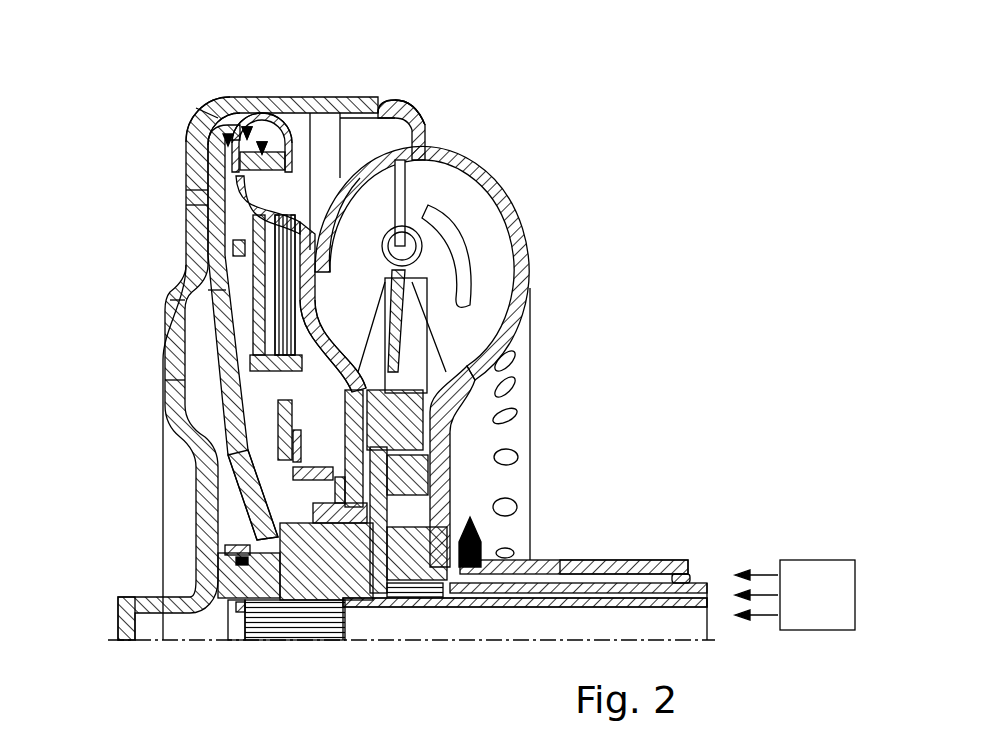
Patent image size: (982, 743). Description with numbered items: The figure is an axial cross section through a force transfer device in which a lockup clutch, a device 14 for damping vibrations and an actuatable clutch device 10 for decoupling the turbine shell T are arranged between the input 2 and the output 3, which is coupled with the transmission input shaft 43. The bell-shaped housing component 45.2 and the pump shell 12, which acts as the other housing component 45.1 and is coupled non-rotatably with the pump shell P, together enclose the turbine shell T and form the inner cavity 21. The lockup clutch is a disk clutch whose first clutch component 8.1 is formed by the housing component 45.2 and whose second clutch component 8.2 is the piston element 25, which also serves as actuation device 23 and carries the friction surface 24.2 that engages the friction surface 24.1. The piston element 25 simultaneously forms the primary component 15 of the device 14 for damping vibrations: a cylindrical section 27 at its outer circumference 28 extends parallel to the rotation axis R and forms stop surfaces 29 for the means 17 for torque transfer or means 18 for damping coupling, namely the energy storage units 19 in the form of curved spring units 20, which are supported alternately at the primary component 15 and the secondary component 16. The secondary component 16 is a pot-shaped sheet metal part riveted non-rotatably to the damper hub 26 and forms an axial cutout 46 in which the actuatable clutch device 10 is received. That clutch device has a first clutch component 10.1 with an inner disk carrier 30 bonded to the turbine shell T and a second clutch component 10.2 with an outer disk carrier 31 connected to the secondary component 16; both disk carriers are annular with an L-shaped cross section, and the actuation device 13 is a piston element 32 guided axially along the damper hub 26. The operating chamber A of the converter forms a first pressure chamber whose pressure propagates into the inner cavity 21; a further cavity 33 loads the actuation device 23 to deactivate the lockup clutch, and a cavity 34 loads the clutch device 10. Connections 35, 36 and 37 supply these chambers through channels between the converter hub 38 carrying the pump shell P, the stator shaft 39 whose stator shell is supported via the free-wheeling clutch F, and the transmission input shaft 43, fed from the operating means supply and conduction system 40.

The input 2 is at (128, 622).
The output 3 is at (700, 597).
The transmission input shaft 43 is at (700, 597).
The first clutch component 8.1 is at (202, 207).
The second clutch component 8.2 is at (160, 192).
The actuatable clutch device 10 is at (253, 308).
The first clutch component 10.1 is at (312, 268).
The second clutch component 10.2 is at (222, 292).
The pump shell 12 is at (415, 115).
The housing component 45.1 is at (415, 115).
The actuation device 13 is at (283, 310).
The piston element 32 is at (283, 310).
The device for damping vibrations 14 is at (228, 138).
The primary component 15 is at (195, 125).
The secondary component 16 is at (253, 194).
The means for torque transfer 17 is at (247, 131).
The means for damping coupling 18 is at (247, 131).
The energy storage units 19 is at (262, 146).
The spring units 20 is at (262, 146).
The inner cavity 21 is at (327, 125).
The actuation device 23 is at (213, 170).
The piston element 25 is at (213, 170).
The friction surface area 24.1 is at (250, 242).
The friction surface area 24.2 is at (210, 270).
The damper hub 26 is at (285, 610).
The cylindrical section 27 is at (410, 146).
The outer circumference 28 is at (205, 110).
The stop surfaces 29 is at (412, 146).
The disk carrier 30 is at (433, 383).
The disk carrier 31 is at (190, 258).
The cavity 33 is at (230, 472).
The cavity 34 is at (455, 398).
The connection 35 is at (553, 572).
The connection 36 is at (228, 550).
The connection 37 is at (322, 610).
The converter hub 38 is at (598, 566).
The stator shaft 39 is at (672, 590).
The operating means supply and/or conduction system 40 is at (835, 608).
The housing component 45.2 is at (200, 112).
The cutout 46 is at (247, 357).
The operating chamber A is at (487, 212).
The pump shell P is at (520, 240).
The lever L is at (420, 347).
The turbine shell T is at (352, 190).
The free-wheeling clutch F is at (462, 480).
The rotation axis R is at (172, 642).